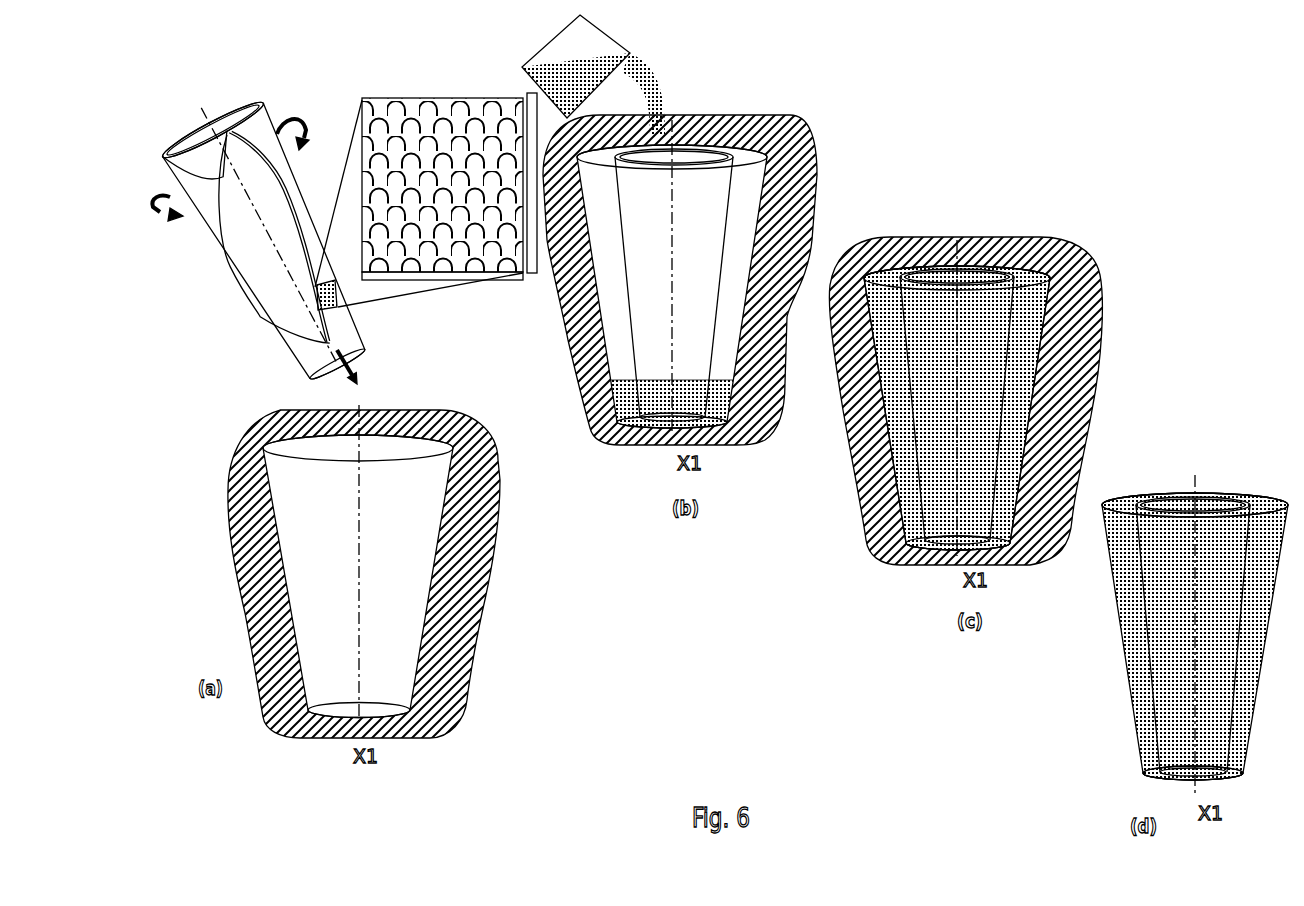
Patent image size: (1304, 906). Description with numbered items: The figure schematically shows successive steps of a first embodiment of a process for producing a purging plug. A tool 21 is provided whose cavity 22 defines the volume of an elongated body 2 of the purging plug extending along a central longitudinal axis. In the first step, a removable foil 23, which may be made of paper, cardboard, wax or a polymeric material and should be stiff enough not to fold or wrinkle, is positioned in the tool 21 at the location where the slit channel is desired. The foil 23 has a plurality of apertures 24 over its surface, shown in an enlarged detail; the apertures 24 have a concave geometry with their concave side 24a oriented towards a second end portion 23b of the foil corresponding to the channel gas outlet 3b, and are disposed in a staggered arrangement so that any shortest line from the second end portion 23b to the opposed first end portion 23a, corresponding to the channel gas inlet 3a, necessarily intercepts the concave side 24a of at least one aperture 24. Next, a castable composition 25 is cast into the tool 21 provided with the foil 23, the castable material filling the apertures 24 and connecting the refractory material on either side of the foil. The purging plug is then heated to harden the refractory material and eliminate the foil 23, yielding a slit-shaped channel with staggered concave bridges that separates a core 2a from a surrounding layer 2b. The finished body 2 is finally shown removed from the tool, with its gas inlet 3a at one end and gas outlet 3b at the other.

The elongated body 2 is at (1099, 517).
The core 2a is at (693, 158).
The surrounding layer 2b is at (1040, 255).
The channel gas inlet 3a is at (1198, 488).
The channel gas outlet 3b is at (1204, 795).
The tool 21 is at (507, 765).
The cavity 22 is at (383, 448).
The foil 23 is at (205, 309).
The first end portion 23a is at (449, 70).
The second end portion 23b is at (446, 293).
The apertures 24 is at (431, 205).
The concave side 24a is at (480, 209).
The castable composition 25 is at (627, 235).